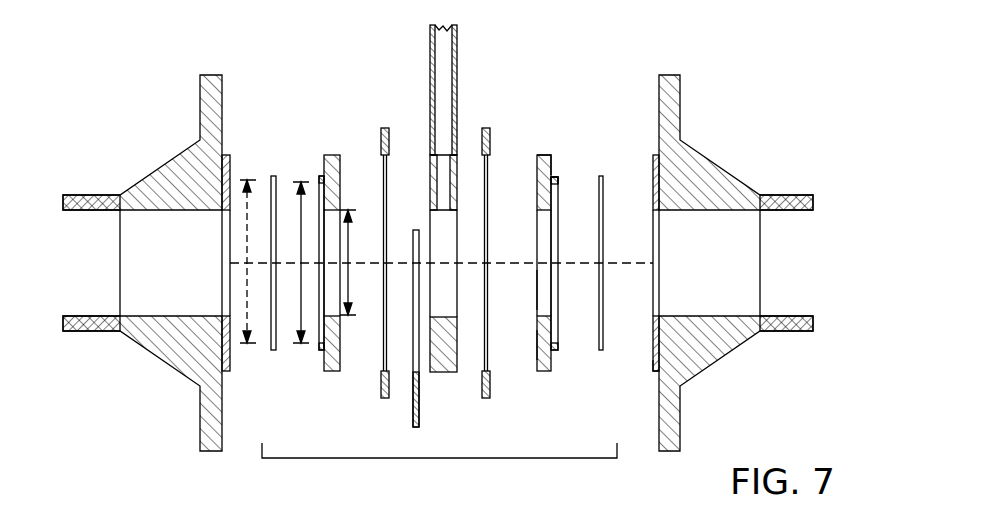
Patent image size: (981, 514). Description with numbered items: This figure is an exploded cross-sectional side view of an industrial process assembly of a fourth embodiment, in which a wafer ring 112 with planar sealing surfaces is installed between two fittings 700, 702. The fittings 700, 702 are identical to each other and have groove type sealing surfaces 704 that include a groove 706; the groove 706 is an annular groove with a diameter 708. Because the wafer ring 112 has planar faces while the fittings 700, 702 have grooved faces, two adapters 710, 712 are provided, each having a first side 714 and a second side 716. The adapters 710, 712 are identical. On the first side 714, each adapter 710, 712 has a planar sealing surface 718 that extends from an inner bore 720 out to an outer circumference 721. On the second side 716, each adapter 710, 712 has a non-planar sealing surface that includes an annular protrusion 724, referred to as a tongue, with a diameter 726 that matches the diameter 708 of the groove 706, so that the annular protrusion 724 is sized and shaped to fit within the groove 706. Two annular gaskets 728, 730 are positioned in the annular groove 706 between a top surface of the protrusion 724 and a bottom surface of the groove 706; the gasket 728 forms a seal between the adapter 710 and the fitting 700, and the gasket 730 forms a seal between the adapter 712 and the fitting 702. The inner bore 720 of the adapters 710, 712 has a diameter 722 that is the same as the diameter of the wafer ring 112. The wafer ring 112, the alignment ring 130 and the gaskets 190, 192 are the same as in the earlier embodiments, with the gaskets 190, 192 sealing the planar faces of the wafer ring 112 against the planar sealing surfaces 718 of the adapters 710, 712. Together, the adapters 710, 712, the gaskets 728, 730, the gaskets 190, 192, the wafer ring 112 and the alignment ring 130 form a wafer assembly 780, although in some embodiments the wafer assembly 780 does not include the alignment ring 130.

The fitting 700 is at (221, 452).
The fitting 702 is at (680, 452).
The groove sealing surface 704 is at (656, 369).
The groove 706 is at (655, 343).
The diameter 708 is at (248, 261).
The adapter 710 is at (333, 372).
The adapter 712 is at (544, 372).
The first side 714 is at (534, 171).
The second side 716 is at (556, 170).
The planar sealing surface 718 is at (538, 345).
The inner bore 720 is at (537, 290).
The outer circumference 721 is at (331, 155).
The diameter 722 is at (357, 262).
The annular protrusion 724 is at (559, 186).
The diameter 726 is at (300, 262).
The annular gasket 728 is at (273, 351).
The annular gasket 730 is at (601, 351).
The wafer assembly 780 is at (340, 459).
The gasket 190 is at (385, 398).
The gasket 192 is at (487, 398).
The wafer ring 112 is at (441, 372).
The alignment ring 130 is at (419, 428).